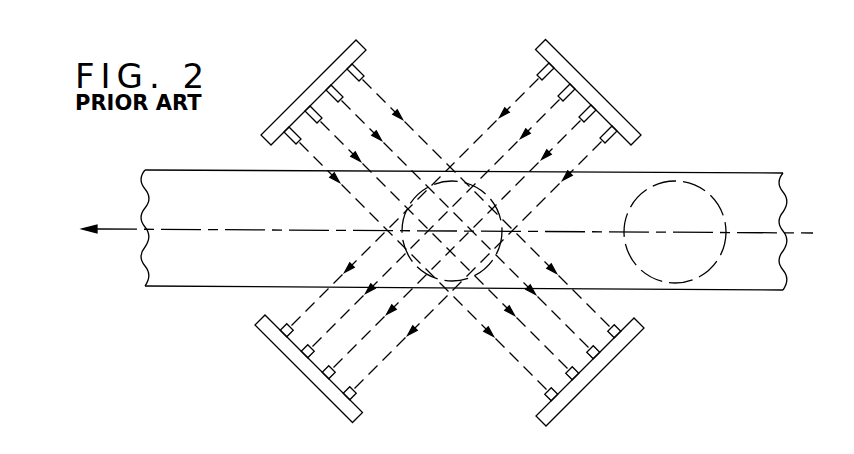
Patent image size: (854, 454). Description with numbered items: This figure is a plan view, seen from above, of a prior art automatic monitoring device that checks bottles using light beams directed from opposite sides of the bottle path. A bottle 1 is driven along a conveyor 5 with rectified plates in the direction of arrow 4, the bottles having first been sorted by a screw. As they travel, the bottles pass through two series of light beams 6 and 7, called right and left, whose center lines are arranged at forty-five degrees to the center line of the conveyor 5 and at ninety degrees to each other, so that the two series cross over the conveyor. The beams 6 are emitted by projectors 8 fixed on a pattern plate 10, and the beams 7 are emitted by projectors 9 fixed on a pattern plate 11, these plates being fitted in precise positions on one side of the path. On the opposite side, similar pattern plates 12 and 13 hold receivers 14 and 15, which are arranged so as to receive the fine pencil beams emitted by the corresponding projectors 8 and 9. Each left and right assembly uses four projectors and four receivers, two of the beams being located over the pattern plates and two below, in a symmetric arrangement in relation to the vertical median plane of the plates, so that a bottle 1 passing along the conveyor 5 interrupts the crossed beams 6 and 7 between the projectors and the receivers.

The bottle 1 is at (700, 186).
The arrow 4 is at (122, 240).
The conveyor 5 is at (748, 281).
The right light beams 6 is at (384, 99).
The left light beams 7 is at (517, 100).
The projector 8 is at (283, 138).
The projector 9 is at (612, 136).
The pattern plate 10 is at (307, 92).
The pattern plate 11 is at (592, 92).
The pattern plate 12 is at (588, 377).
The pattern plate 13 is at (308, 368).
The receiver 14 is at (552, 397).
The receiver 15 is at (357, 396).